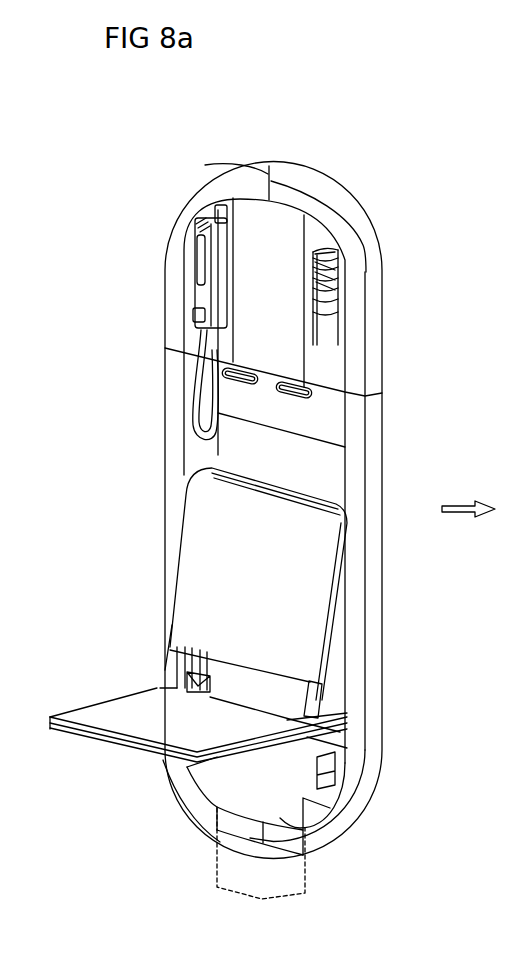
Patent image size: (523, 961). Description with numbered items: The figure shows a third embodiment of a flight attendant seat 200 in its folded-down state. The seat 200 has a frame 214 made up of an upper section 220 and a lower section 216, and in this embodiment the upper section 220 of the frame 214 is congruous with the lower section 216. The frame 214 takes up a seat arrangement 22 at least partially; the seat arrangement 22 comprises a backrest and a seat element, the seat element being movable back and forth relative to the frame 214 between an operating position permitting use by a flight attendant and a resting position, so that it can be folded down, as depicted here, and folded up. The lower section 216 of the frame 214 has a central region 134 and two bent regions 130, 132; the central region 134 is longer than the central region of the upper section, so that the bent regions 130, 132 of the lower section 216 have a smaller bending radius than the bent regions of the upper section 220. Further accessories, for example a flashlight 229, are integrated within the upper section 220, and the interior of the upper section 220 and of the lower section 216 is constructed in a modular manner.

The flight attendant seat 200 is at (140, 172).
The upper section 220 is at (345, 223).
The flashlight 229 is at (340, 275).
The frame 214 is at (396, 343).
The seat arrangement 22 is at (313, 560).
The lower section 216 is at (352, 782).
The bent region 130 is at (185, 797).
The bent region 132 is at (333, 830).
The central region 134 is at (273, 866).